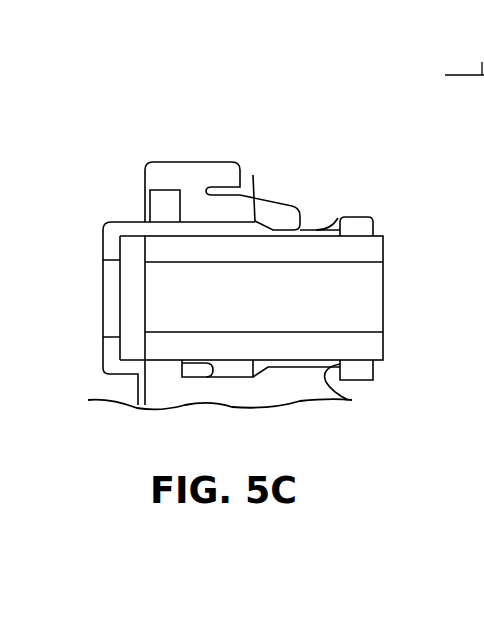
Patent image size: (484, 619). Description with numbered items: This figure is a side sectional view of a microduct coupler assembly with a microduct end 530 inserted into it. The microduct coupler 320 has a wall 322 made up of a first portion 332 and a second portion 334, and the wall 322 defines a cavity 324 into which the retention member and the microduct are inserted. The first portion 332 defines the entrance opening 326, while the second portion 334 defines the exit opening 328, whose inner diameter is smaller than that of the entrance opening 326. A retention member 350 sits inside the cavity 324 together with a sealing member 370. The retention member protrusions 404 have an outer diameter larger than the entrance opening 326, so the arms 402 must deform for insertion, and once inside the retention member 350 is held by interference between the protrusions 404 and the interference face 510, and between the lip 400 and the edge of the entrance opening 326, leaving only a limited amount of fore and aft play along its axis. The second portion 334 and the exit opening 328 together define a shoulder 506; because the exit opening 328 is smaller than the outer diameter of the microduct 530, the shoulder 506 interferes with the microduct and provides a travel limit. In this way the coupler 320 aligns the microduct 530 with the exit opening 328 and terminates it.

The microduct coupler 320 is at (209, 85).
The wall 322 is at (273, 210).
The cavity 324 is at (222, 370).
The entrance opening 326 is at (320, 230).
The exit opening 328 is at (101, 312).
The first portion 332 is at (295, 217).
The second portion 334 is at (167, 200).
The retention member 350 is at (375, 228).
The sealing member 370 is at (195, 365).
The lip 400 is at (352, 400).
The arms 402 is at (287, 373).
The retention member protrusions 404 is at (262, 372).
The shoulder 506 is at (107, 236).
The interference face 510 is at (252, 176).
The microduct end 530 is at (150, 341).